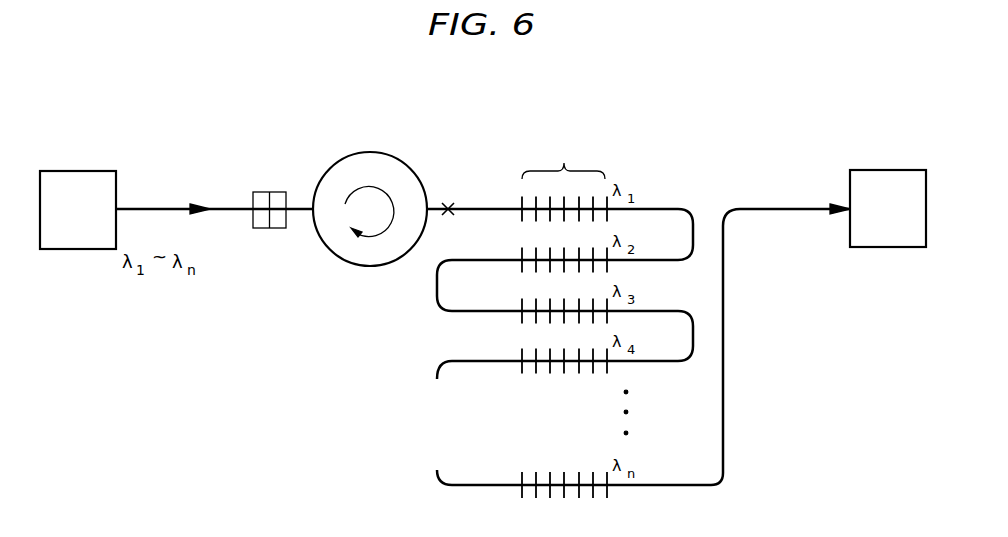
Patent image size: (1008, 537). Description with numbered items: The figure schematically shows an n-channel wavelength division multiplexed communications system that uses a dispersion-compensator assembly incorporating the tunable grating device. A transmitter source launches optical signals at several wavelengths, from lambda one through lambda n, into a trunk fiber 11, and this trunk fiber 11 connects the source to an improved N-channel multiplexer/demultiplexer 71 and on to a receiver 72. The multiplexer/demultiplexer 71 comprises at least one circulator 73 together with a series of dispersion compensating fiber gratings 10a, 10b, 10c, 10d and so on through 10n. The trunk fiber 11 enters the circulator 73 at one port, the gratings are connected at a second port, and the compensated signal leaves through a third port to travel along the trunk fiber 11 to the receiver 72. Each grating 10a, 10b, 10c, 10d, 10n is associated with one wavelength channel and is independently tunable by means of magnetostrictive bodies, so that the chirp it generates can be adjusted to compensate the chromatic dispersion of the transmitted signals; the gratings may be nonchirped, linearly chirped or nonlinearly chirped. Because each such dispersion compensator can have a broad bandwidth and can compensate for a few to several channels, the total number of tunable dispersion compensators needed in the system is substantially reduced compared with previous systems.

The N-channel multiplexer/demultiplexer 71 is at (97, 181).
The receiver 72 is at (884, 181).
The circulator 73 is at (420, 152).
The trunk fiber 11 is at (773, 210).
The dispersion compensating fiber grating 10a is at (520, 216).
The dispersion compensating fiber grating 10b is at (520, 267).
The dispersion compensating fiber grating 10c is at (520, 317).
The dispersion compensating fiber grating 10d is at (520, 367).
The dispersion compensating fiber grating 10n is at (522, 479).